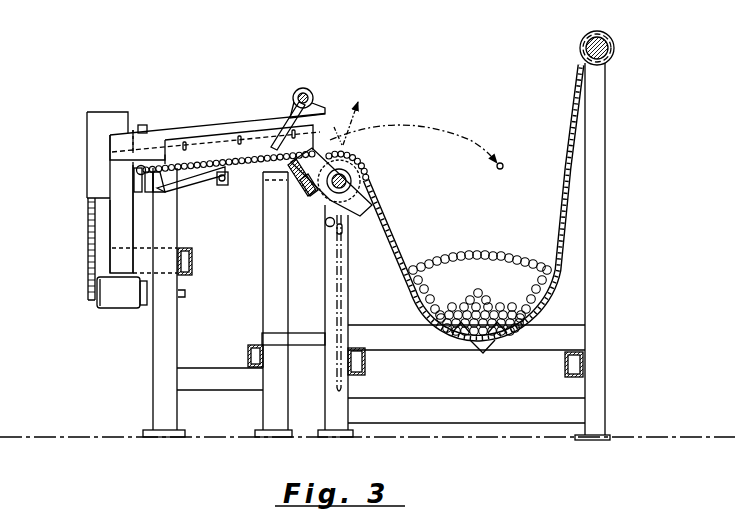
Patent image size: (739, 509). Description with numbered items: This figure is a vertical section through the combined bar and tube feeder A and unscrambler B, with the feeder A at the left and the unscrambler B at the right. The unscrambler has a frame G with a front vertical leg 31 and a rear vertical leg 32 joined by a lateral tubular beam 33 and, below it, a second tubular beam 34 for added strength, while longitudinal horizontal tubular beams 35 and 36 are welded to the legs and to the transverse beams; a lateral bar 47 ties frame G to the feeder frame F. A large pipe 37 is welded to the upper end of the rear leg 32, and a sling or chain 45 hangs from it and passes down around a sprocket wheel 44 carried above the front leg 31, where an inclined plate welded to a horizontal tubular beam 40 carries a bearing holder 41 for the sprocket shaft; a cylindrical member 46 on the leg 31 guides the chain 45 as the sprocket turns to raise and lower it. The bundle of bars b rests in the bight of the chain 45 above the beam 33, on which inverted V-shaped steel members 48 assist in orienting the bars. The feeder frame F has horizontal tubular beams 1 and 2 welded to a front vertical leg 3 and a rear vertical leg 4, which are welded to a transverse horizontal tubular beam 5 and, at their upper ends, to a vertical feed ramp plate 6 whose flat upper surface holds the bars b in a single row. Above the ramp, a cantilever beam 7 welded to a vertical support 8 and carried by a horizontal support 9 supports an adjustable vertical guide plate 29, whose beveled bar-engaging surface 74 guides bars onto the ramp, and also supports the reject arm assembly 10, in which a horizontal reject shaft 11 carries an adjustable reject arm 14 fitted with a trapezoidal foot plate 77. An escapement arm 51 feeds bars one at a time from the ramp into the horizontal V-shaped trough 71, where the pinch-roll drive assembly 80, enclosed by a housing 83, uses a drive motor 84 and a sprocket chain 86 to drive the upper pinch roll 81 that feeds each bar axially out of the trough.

The horizontal tubular beam 1 is at (193, 262).
The horizontal tubular beam 2 is at (248, 346).
The front vertical leg 3 is at (153, 357).
The rear vertical leg 4 is at (263, 288).
The transverse horizontal tubular beam 5 is at (203, 384).
The vertical feed ramp plate 6 is at (253, 176).
The cantilever beam 7 is at (158, 135).
The vertical support 8 is at (115, 218).
The horizontal support 9 is at (143, 252).
The reject arm assembly 10 is at (312, 78).
The horizontal reject shaft 11 is at (302, 88).
The adjustable reject arm 14 is at (273, 132).
The adjustable vertical guide plate 29 is at (205, 132).
The front vertical leg 31 is at (348, 286).
The rear vertical leg 32 is at (603, 208).
The lateral tubular beam 33 is at (393, 344).
The second tubular beam 34 is at (497, 420).
The longitudinal horizontal tubular beam 35 is at (366, 362).
The longitudinal horizontal tubular beam 36 is at (565, 365).
The large pipe 37 is at (584, 46).
The horizontal tubular beam 40 is at (298, 184).
The bearing holder 41 is at (358, 217).
The sprocket wheel 44 is at (371, 191).
The sling or chain 45 is at (563, 212).
The cylindrical member 46 is at (325, 223).
The lateral bar 47 is at (283, 335).
The inverted V-shaped steel member 48 is at (483, 354).
The escapement arm 51 is at (188, 180).
The horizontal trough 71 is at (133, 174).
The beveled bar-engaging surface 74 is at (328, 140).
The trapezoidal plate 77 is at (350, 138).
The pinch-roll drive assembly 80 is at (104, 110).
The upper pinch roll 81 is at (143, 125).
The housing 83 is at (87, 155).
The drive motor 84 is at (112, 302).
The sprocket chain 86 is at (88, 253).
The bar and tube feeder A is at (228, 98).
The unscrambler B is at (623, 58).
The bar b is at (500, 268).
The rigid frame F is at (153, 398).
The frame G is at (605, 297).